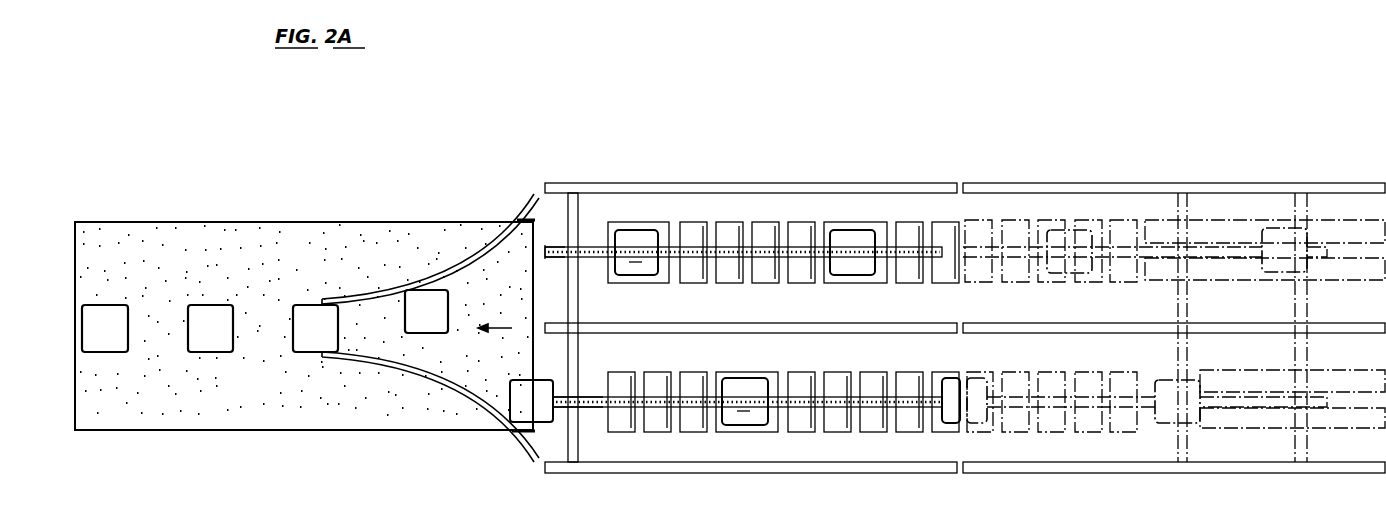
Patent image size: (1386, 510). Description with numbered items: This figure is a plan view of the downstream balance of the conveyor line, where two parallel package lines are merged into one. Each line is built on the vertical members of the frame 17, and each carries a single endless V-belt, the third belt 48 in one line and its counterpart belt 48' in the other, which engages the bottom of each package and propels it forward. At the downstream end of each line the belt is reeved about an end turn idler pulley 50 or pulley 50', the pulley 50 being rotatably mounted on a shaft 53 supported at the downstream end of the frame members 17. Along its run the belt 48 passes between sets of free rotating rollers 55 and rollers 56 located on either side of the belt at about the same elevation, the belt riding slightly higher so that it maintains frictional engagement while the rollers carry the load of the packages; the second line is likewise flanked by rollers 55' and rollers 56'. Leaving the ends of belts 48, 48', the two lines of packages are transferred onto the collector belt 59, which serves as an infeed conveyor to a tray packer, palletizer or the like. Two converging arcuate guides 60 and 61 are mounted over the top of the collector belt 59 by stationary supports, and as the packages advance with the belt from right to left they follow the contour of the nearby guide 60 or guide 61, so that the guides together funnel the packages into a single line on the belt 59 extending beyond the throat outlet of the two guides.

The frame 17 is at (698, 183).
The third belt 48 is at (940, 427).
The third belt 48' is at (936, 230).
The pulley 50 is at (559, 384).
The pulley 50' is at (555, 235).
The shaft 53 is at (578, 447).
The rollers 55 is at (996, 414).
The rollers 55' is at (996, 263).
The rollers 56 is at (961, 381).
The rollers 56' is at (961, 235).
The collector belt 59 is at (266, 399).
The arcuate guide 60 is at (481, 404).
The arcuate guide 61 is at (492, 243).